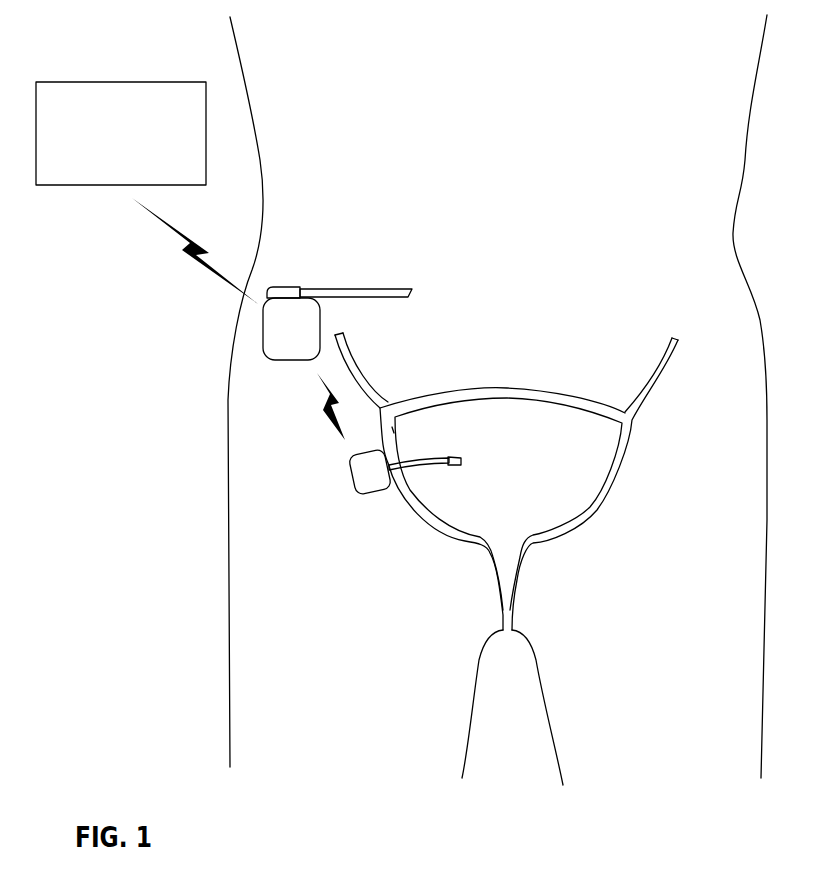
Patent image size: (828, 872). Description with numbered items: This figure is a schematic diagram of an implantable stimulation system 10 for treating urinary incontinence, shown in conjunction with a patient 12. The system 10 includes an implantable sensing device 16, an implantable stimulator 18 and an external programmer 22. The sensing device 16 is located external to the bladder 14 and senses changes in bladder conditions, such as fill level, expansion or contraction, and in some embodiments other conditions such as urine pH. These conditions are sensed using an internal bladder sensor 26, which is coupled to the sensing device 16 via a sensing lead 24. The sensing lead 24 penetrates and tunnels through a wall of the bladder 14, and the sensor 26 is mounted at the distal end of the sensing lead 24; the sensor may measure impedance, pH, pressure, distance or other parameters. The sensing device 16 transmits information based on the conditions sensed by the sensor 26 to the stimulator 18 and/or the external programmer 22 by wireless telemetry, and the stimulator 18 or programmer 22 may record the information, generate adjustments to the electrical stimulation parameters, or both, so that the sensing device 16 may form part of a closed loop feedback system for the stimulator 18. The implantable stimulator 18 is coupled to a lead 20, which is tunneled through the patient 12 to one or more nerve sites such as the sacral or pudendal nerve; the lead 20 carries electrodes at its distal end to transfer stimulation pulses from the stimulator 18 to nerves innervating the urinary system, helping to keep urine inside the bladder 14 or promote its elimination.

The implantable stimulation system 10 is at (477, 400).
The patient 12 is at (710, 247).
The bladder 14 is at (527, 387).
The implantable sensing device 16 is at (375, 494).
The implantable stimulator 18 is at (277, 287).
The lead 20 is at (377, 289).
The external programmer 22 is at (71, 82).
The sensing lead 24 is at (417, 457).
The internal bladder sensor 26 is at (453, 455).